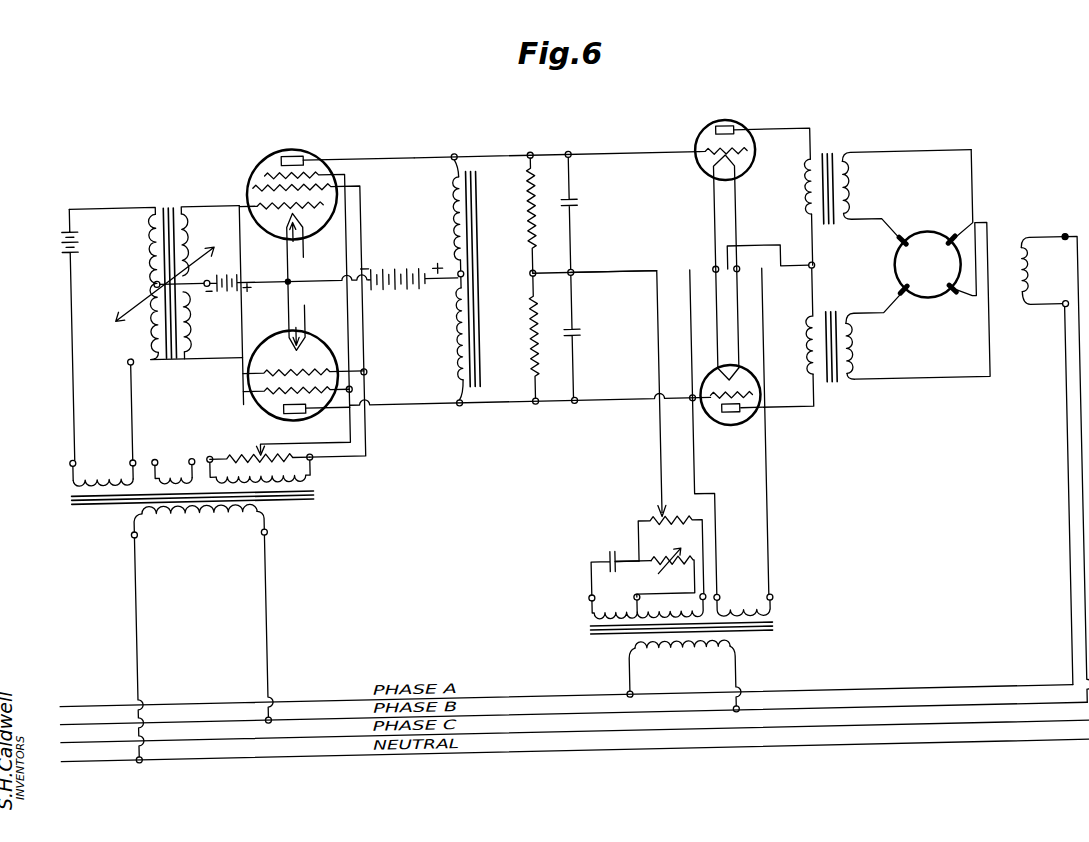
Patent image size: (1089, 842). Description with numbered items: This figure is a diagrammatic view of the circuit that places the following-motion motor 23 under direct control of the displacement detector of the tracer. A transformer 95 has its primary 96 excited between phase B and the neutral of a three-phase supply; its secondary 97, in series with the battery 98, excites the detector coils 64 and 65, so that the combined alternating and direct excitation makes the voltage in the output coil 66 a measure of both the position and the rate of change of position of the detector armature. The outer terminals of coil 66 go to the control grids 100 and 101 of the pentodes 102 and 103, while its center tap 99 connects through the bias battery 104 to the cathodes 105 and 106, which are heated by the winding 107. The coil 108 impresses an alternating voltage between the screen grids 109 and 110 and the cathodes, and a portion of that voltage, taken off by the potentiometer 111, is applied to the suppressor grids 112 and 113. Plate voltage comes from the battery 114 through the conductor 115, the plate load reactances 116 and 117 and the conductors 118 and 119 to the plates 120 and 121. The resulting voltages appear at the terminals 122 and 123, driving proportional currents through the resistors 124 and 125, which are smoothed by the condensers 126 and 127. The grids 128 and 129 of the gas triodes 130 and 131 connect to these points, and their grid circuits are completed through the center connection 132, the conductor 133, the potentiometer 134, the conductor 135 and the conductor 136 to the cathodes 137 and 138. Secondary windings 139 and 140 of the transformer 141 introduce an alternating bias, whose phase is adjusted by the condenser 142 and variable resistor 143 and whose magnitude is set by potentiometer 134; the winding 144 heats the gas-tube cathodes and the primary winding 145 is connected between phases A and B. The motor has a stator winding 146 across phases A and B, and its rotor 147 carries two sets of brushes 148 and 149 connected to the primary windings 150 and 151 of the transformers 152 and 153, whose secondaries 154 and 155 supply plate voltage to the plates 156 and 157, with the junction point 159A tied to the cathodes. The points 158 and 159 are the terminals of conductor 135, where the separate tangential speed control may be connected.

The following-motion motor 23 is at (980, 232).
The displacement detector coil 64 is at (152, 240).
The displacement detector coil 65 is at (152, 347).
The output coil 66 is at (194, 235).
The transformer 95 is at (85, 497).
The primary 96 is at (188, 512).
The secondary 97 is at (100, 466).
The battery 98 is at (64, 232).
The center tap 99 is at (179, 275).
The control grid 100 is at (277, 182).
The control grid 101 is at (290, 327).
The pentode 102 is at (284, 146).
The pentode 103 is at (276, 390).
The bias battery 104 is at (238, 270).
The cathode 105 is at (250, 200).
The cathode 106 is at (264, 334).
The winding 107 is at (175, 462).
The coil 108 is at (306, 475).
The screen grid 109 is at (338, 172).
The screen grid 110 is at (262, 368).
The potentiometer 111 is at (296, 456).
The suppressor grid 112 is at (322, 150).
The suppressor grid 113 is at (262, 388).
The plate battery 114 is at (392, 264).
The conductor 115 is at (313, 276).
The plate load reactance 116 is at (456, 200).
The plate load reactance 117 is at (460, 338).
The conductor 118 is at (458, 152).
The conductor 119 is at (412, 404).
The plate 120 is at (303, 150).
The plate 121 is at (306, 410).
The terminal 122 is at (538, 152).
The terminal 123 is at (535, 405).
The resistor 124 is at (532, 219).
The resistor 125 is at (533, 322).
The condenser 126 is at (583, 205).
The condenser 127 is at (583, 333).
The grid 128 is at (706, 154).
The grid 129 is at (750, 414).
The gas triode 130 is at (713, 127).
The gas triode 131 is at (714, 376).
The center connection 132 is at (532, 273).
The conductor 133 is at (644, 273).
The potentiometer 134 is at (652, 520).
The conductor 135 is at (663, 568).
The conductor 136 is at (722, 504).
The cathode 137 is at (712, 173).
The cathode 138 is at (751, 382).
The secondary winding 139 is at (590, 606).
The secondary winding 140 is at (680, 617).
The transformer 141 is at (770, 636).
The condenser 142 is at (609, 556).
The variable resistor 143 is at (653, 558).
The winding 144 is at (748, 612).
The primary winding 145 is at (684, 657).
The stator winding 146 is at (1032, 280).
The rotor 147 is at (925, 242).
The brushes 148 is at (902, 248).
The brushes 149 is at (953, 246).
The primary winding 150 is at (860, 194).
The primary winding 151 is at (860, 358).
The transformer 152 is at (834, 157).
The transformer 153 is at (842, 390).
The secondary coil 154 is at (810, 186).
The secondary coil 155 is at (808, 351).
The plate 156 is at (741, 129).
The plate 157 is at (730, 424).
The connection point 158 is at (691, 568).
The connection point 159 is at (720, 598).
The junction point 159A is at (818, 275).